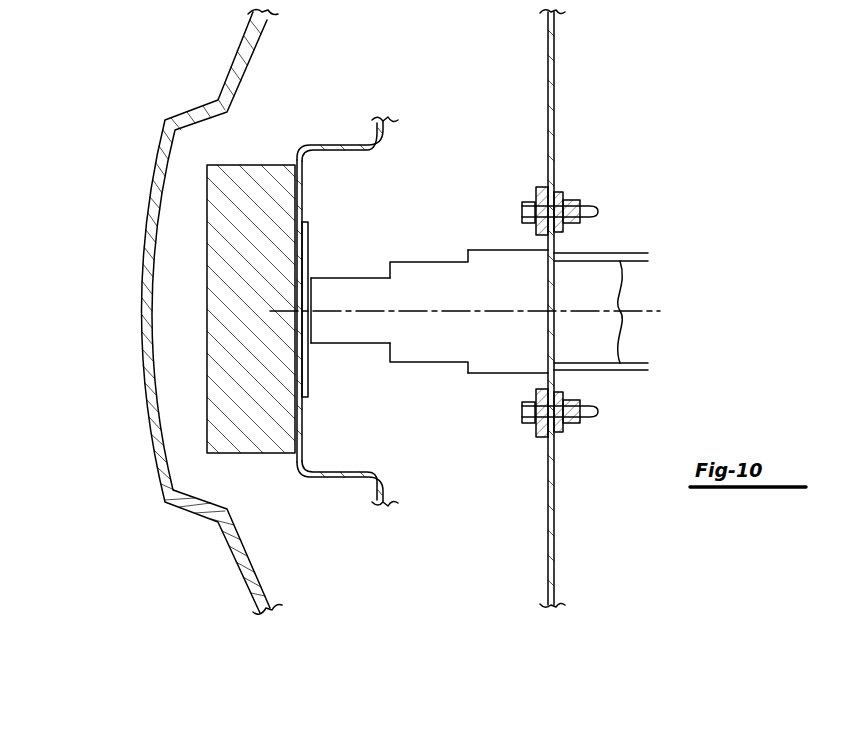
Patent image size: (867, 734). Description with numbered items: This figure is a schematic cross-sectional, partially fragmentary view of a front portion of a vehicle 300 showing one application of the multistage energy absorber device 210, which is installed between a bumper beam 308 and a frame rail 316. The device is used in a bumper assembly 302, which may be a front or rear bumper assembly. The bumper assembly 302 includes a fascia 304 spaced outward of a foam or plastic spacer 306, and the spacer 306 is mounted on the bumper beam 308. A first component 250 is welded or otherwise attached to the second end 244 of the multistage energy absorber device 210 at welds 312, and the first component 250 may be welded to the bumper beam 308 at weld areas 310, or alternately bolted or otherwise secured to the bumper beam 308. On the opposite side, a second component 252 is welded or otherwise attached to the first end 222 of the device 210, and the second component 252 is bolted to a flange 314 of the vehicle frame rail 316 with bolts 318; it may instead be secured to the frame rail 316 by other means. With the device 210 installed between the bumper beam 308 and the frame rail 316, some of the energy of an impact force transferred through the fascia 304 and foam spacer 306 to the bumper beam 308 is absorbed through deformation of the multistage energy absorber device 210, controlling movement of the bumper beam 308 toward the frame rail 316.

The vehicle 300 is at (127, 37).
The bumper assembly 302 is at (127, 134).
The fascia 304 is at (139, 311).
The spacer 306 is at (257, 163).
The bumper beam 308 is at (338, 143).
The weld areas 310 is at (304, 220).
The welds 312 is at (311, 276).
The second end 244 is at (318, 345).
The first component 250 is at (310, 388).
The multistage energy absorber device 210 is at (447, 180).
The first end 222 is at (543, 373).
The second component 252 is at (545, 187).
The flange 314 is at (556, 503).
The frame rail 316 is at (606, 253).
The bolts 318 is at (527, 201).